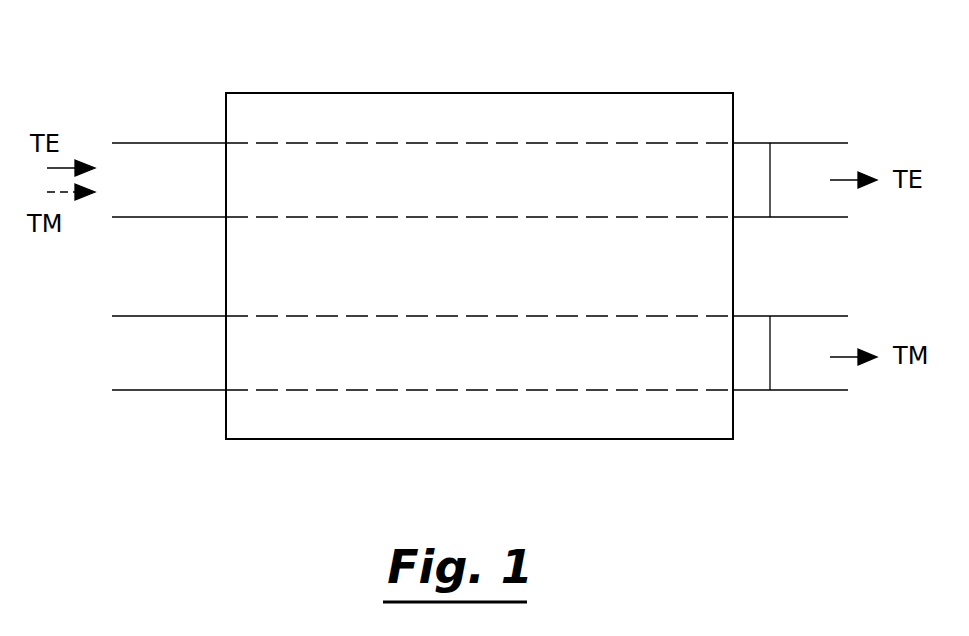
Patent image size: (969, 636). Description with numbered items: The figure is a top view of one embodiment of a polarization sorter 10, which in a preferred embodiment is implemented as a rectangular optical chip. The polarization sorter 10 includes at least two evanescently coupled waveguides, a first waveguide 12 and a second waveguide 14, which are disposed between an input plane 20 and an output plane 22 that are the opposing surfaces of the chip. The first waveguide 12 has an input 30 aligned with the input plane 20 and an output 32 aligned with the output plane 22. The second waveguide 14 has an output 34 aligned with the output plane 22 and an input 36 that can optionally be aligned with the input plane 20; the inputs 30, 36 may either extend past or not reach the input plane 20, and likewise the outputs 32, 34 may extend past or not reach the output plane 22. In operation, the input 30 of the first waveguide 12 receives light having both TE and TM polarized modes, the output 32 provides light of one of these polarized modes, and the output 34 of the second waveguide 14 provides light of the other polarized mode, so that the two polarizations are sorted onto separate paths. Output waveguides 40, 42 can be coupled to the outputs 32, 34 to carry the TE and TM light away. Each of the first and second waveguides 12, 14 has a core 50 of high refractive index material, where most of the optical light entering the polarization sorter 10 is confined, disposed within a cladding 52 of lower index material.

The polarization sorter 10 is at (455, 92).
The first waveguide 12 is at (302, 143).
The second waveguide 14 is at (333, 390).
The input plane 20 is at (226, 115).
The output plane 22 is at (733, 112).
The input 30 is at (190, 207).
The output 32 is at (745, 205).
The output 34 is at (752, 383).
The input 36 is at (193, 383).
The output waveguide 40 is at (808, 150).
The output waveguide 42 is at (803, 325).
The core 50 is at (384, 430).
The cladding 52 is at (643, 100).